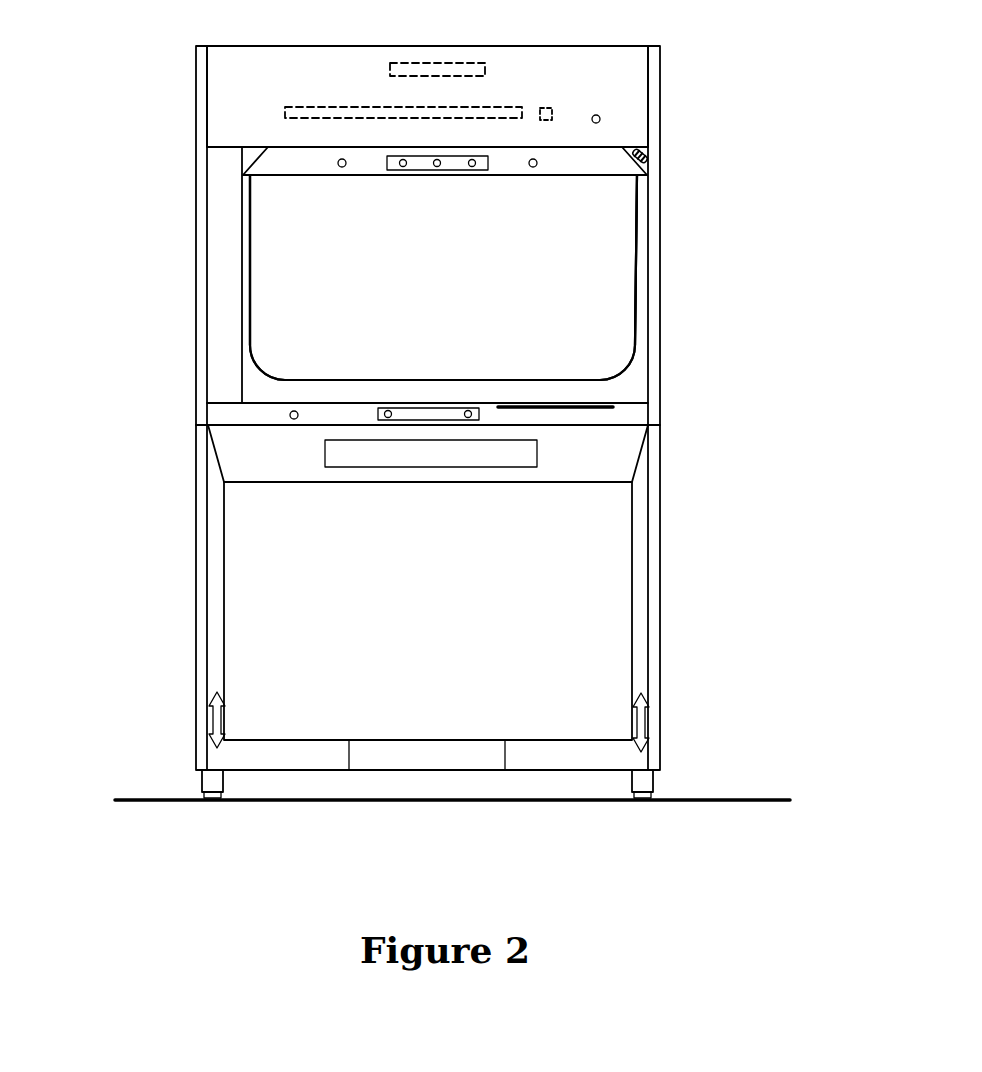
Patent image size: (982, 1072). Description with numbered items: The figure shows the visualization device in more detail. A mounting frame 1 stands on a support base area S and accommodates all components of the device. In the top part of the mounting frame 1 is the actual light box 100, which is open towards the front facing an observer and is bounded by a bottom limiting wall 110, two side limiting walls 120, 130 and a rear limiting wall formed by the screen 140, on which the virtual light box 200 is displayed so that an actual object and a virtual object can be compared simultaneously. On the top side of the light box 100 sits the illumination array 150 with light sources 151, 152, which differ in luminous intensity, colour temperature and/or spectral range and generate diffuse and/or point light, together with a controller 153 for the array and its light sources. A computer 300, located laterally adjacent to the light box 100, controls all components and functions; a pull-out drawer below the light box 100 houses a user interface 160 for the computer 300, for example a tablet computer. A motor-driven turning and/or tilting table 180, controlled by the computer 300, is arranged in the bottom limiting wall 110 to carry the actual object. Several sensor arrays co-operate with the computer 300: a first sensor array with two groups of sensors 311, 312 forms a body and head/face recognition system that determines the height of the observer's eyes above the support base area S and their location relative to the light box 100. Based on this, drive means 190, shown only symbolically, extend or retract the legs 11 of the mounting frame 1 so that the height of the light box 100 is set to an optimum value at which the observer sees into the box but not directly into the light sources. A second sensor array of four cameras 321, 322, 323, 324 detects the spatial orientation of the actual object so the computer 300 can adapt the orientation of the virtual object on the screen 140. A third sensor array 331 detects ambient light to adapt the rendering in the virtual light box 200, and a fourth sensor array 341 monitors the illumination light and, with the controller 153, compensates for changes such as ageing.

The mounting frame 1 is at (185, 425).
The legs 11 is at (213, 783).
The actual light box 100 is at (640, 389).
The bottom limiting wall 110 is at (337, 403).
The side limiting wall 120 is at (246, 315).
The side limiting wall 130 is at (647, 303).
The screen 140 is at (262, 275).
The illumination array 150 is at (230, 98).
The light source 151 is at (345, 103).
The light source 152 is at (546, 108).
The controller 153 is at (450, 70).
The user interface 160 is at (442, 468).
The turning and/or tilting table 180 is at (572, 409).
The drive means 190 is at (216, 718).
The virtual light box 200 is at (588, 235).
The computer 300 is at (222, 222).
The group of sensors 311 is at (403, 171).
The group of sensors 312 is at (422, 421).
The camera 321 is at (650, 159).
The camera 322 is at (650, 152).
The camera 323 is at (342, 168).
The camera 324 is at (533, 168).
The third sensor array 331 is at (600, 119).
The fourth sensor array 341 is at (294, 420).
The support base area S is at (760, 799).